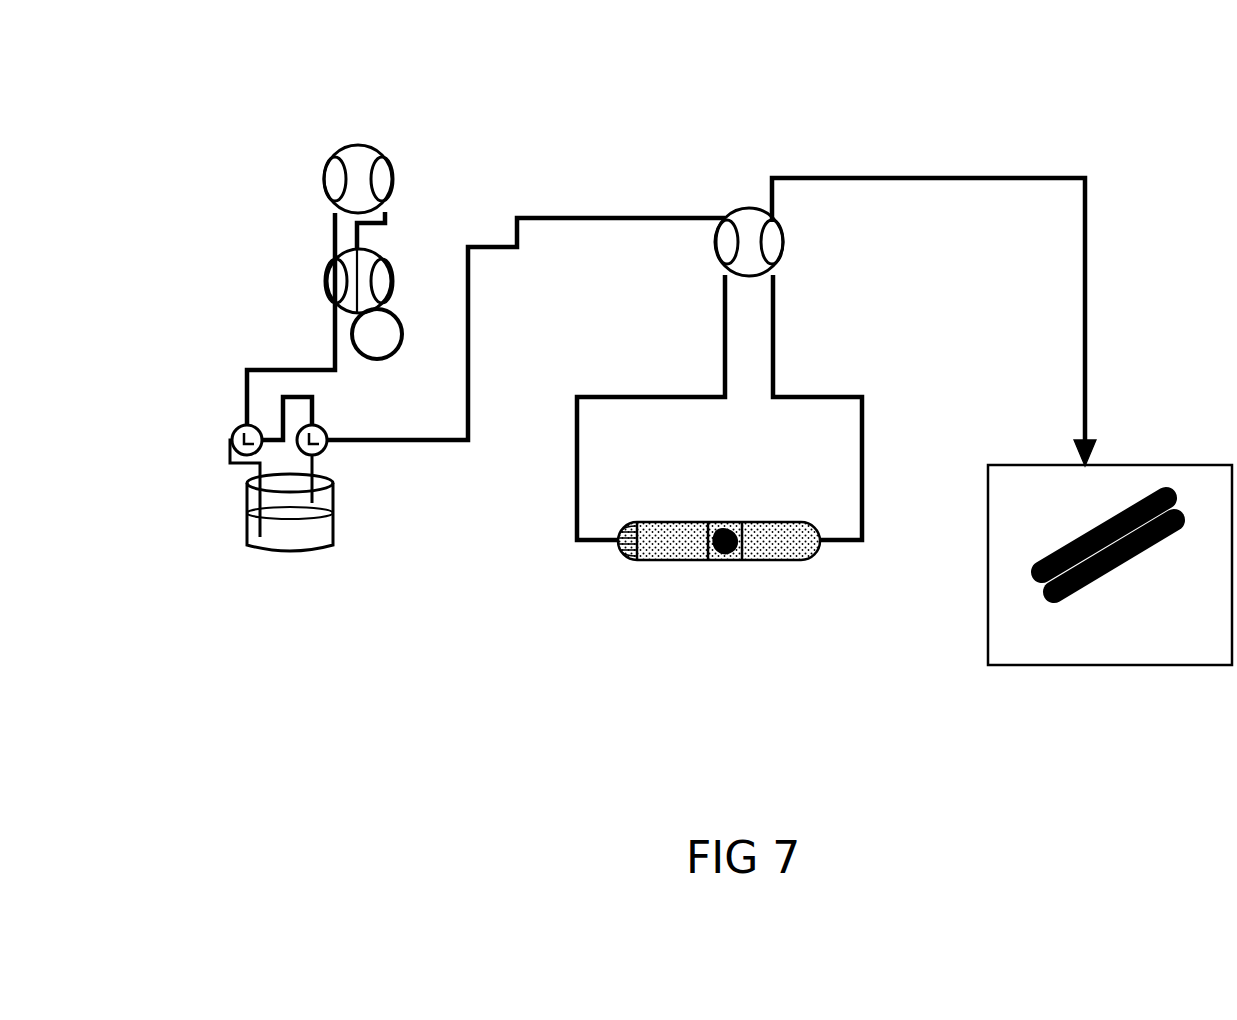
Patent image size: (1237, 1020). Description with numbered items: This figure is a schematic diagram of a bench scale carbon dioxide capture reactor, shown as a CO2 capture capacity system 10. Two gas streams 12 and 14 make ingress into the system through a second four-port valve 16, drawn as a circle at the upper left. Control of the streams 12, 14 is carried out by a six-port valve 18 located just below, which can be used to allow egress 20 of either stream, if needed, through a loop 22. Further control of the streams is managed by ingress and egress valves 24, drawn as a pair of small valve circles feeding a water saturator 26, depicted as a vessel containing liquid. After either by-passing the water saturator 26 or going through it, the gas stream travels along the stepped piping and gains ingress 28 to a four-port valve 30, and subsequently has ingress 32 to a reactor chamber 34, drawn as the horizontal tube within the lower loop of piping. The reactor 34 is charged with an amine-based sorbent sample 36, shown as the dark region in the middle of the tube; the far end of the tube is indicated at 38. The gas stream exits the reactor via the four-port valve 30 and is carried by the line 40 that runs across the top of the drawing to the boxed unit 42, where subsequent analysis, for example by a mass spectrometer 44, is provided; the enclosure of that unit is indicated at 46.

The CO2 capture capacity system 10 is at (726, 684).
The gas stream 12 is at (338, 150).
The gas stream 14 is at (379, 149).
The second 4-port valve 16 is at (393, 170).
The 6-port valve 18 is at (326, 280).
The egress 20 is at (384, 257).
The loop 22 is at (383, 358).
The ingress and egress valves 24 is at (236, 432).
The water saturator 26 is at (280, 556).
The ingress 28 is at (725, 217).
The 4-port valve 30 is at (740, 210).
The ingress 32 is at (618, 547).
The reactor chamber 34 is at (665, 560).
The amine-based sorbent sample 36 is at (730, 562).
The outlet end 38 is at (822, 545).
The conduit 40 is at (780, 218).
The detector 42 is at (1090, 463).
The mass spectrometer 44 is at (1112, 568).
The housing 46 is at (988, 604).